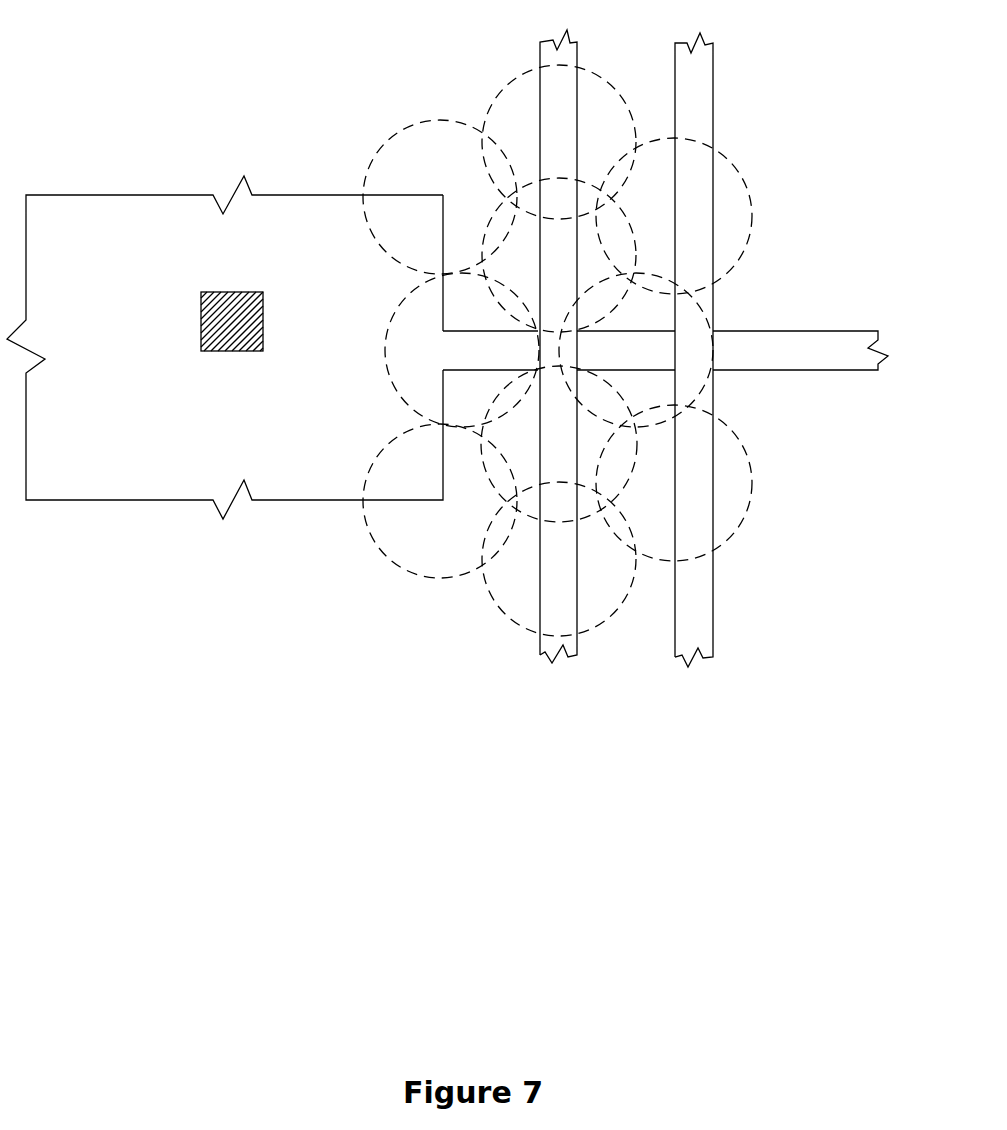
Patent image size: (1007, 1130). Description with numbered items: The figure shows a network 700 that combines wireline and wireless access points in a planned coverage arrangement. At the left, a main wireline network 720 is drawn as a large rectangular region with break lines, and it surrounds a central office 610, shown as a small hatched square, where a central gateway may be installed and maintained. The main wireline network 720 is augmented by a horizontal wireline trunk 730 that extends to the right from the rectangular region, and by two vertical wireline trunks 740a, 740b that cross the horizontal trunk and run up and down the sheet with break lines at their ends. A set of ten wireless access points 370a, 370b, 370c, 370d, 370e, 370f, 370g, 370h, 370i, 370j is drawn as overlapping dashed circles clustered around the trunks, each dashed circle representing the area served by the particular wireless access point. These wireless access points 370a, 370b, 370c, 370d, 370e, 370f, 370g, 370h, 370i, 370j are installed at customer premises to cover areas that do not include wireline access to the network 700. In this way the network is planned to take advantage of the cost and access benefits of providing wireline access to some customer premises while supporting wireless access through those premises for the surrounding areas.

The network 700 is at (168, 36).
The central office 610 is at (192, 304).
The main wireline network 720 is at (135, 457).
The horizontal wireline trunk 730 is at (665, 331).
The vertical wireline trunk 740a is at (501, 367).
The vertical wireline trunk 740b is at (750, 345).
The wireless access point 370a is at (434, 185).
The wireless access point 370b is at (538, 143).
The wireless access point 370c is at (671, 217).
The wireless access point 370d is at (538, 283).
The wireless access point 370e is at (493, 400).
The wireless access point 370f is at (430, 548).
The wireless access point 370g is at (539, 590).
The wireless access point 370h is at (673, 515).
The wireless access point 370i is at (536, 445).
The wireless access point 370j is at (670, 397).